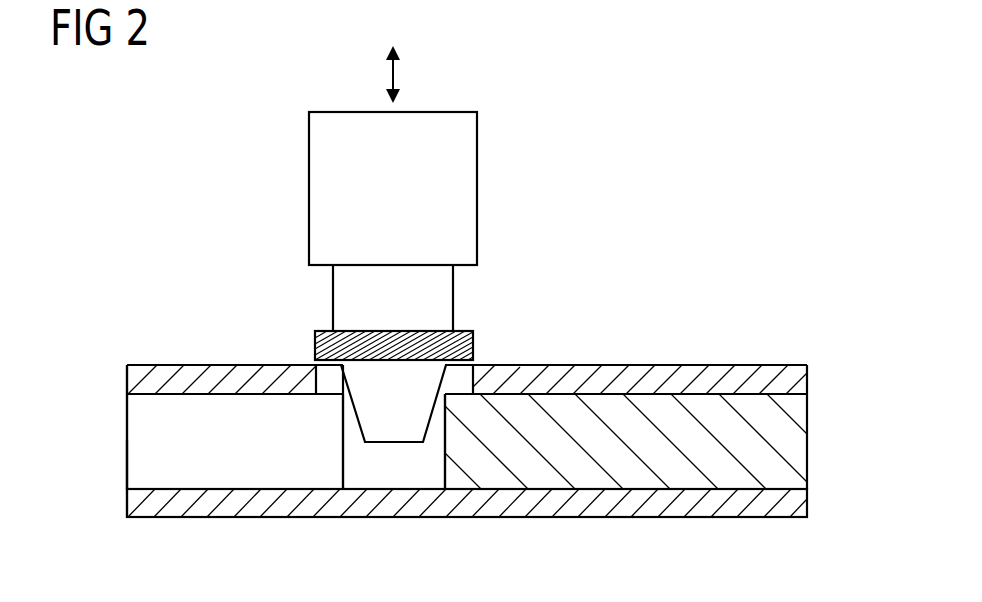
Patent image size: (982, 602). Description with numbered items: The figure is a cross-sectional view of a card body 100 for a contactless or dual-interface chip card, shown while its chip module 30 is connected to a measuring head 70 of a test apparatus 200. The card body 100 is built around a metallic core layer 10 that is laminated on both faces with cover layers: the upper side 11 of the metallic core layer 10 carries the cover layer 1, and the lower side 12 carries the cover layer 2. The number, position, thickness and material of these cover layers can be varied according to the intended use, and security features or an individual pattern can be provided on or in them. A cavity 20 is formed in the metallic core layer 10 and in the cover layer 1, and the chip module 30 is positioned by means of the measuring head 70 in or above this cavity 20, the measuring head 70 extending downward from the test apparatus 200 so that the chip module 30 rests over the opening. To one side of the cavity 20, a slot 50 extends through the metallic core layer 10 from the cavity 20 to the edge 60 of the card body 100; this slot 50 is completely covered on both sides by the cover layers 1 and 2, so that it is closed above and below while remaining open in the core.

The card body 100 is at (110, 305).
The test apparatus 200 is at (477, 193).
The measuring head 70 is at (453, 293).
The chip module 30 is at (473, 346).
The cover layer 1 is at (807, 381).
The upper side 11 is at (733, 377).
The metallic core layer 10 is at (795, 442).
The cover layer 2 is at (807, 500).
The lower side 12 is at (670, 505).
The cavity 20 is at (396, 472).
The slot 50 is at (130, 423).
The edge 60 is at (127, 473).